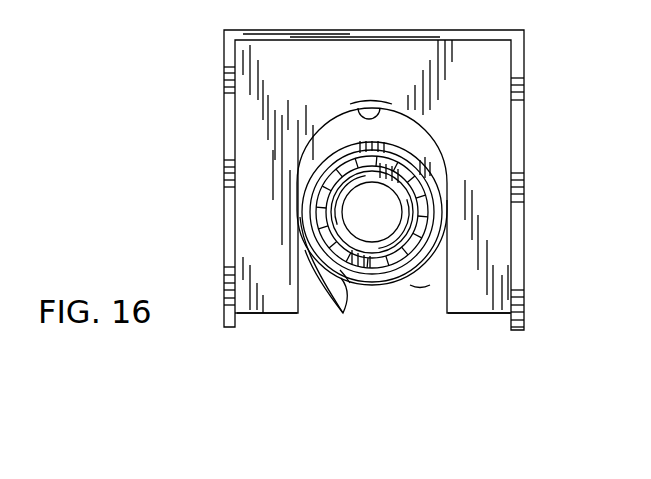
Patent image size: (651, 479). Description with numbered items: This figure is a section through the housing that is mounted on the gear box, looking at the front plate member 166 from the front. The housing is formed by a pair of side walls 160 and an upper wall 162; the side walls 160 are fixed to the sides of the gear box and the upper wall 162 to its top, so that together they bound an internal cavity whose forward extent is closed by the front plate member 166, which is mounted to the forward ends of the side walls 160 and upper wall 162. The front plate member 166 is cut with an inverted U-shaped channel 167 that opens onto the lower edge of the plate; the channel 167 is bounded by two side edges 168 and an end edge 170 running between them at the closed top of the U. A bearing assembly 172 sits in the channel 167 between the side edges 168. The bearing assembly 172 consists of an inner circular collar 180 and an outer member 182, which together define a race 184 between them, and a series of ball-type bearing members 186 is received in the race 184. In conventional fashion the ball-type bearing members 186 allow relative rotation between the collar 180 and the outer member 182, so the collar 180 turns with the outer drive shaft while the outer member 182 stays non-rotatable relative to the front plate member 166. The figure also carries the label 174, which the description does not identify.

The side walls 160 is at (224, 172).
The upper wall 162 is at (442, 32).
The front plate member 166 is at (470, 121).
The inverted U-shaped channel 167 is at (420, 300).
The side edges 168 is at (300, 290).
The end edge 170 is at (355, 108).
The bearing assembly 172 is at (370, 300).
The inner race 174 is at (407, 212).
The inner circular collar 180 is at (425, 170).
The outer member 182 is at (412, 160).
The race 184 is at (378, 286).
The ball-type bearing members 186 is at (326, 297).